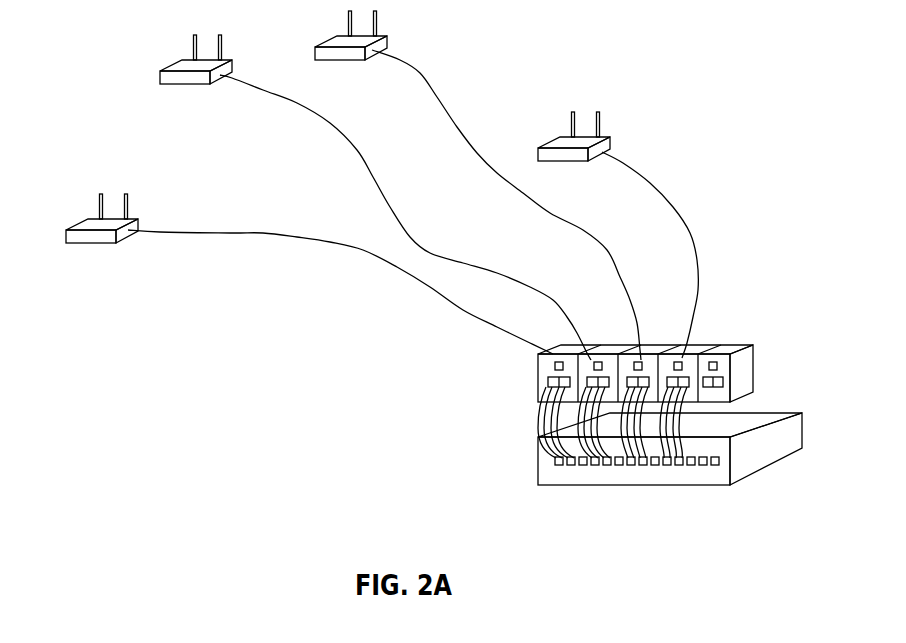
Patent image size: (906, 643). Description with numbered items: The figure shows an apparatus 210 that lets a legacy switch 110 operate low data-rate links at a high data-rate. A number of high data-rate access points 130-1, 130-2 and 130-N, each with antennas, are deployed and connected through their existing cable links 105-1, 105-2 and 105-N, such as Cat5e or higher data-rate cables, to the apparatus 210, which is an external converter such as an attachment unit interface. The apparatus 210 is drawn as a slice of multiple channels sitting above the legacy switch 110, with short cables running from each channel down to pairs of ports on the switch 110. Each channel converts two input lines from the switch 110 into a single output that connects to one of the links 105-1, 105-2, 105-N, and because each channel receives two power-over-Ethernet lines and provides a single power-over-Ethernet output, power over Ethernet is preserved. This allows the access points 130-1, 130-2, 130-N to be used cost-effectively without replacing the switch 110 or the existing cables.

The access point 130-1 is at (99, 237).
The access point 130-2 is at (195, 78).
The access point 130-N is at (574, 155).
The low data-rate link 105-1 is at (340, 292).
The low data-rate link 105-2 is at (405, 217).
The low data-rate link 105-N is at (669, 255).
The apparatus 210 is at (537, 375).
The legacy switch 110 is at (692, 485).